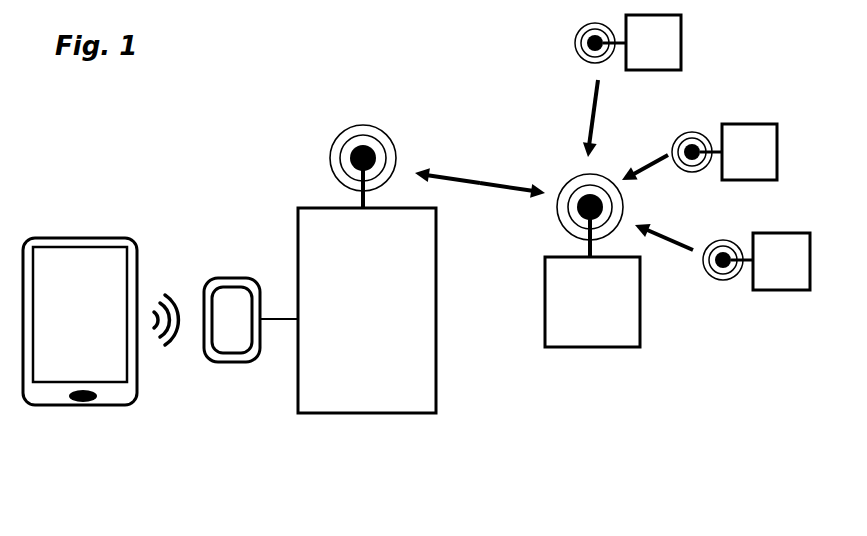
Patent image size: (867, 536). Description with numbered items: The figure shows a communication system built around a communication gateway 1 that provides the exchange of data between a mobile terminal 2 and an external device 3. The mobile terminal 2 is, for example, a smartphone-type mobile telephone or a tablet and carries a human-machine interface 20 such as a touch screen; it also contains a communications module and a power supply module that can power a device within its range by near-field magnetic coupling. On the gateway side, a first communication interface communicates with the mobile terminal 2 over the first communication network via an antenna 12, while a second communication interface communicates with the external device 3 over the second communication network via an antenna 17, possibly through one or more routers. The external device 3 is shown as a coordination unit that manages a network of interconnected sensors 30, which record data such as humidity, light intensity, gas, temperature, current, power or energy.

The communication gateway 1 is at (395, 413).
The mobile terminal 2 is at (68, 236).
The external device 3 is at (642, 313).
The antenna 12 is at (228, 362).
The antenna 17 is at (330, 160).
The human-machine interface 20 is at (100, 280).
The sensors 30 is at (682, 45).